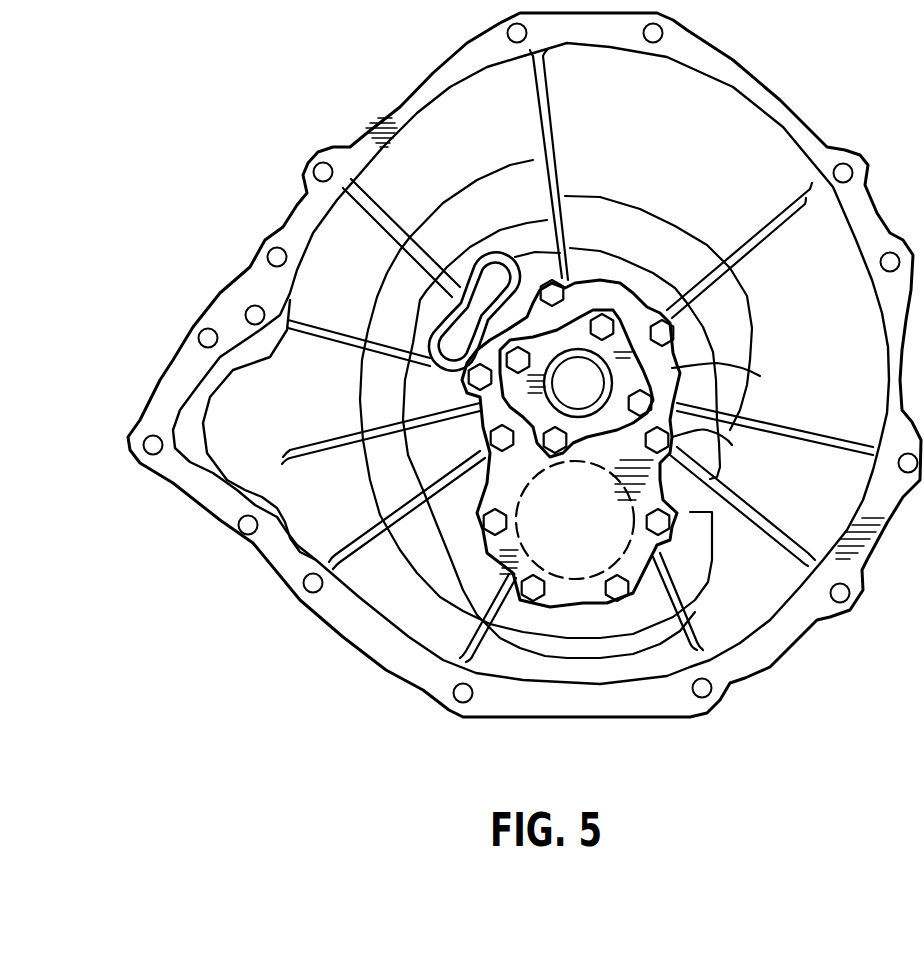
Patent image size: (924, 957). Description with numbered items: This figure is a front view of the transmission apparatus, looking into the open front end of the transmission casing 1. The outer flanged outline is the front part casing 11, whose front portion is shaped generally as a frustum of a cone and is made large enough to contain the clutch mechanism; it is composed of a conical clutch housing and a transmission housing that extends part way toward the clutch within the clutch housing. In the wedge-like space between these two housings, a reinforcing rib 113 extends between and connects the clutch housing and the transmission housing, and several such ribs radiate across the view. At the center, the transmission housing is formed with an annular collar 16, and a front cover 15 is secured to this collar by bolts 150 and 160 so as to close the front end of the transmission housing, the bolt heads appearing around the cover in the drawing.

The transmission casing 1 is at (775, 84).
The front part casing 11 is at (797, 121).
The reinforcing rib 113 is at (547, 118).
The annular collar 16 is at (629, 350).
The front cover 15 is at (645, 400).
The bolt 160 is at (760, 376).
The bolt 150 is at (732, 445).